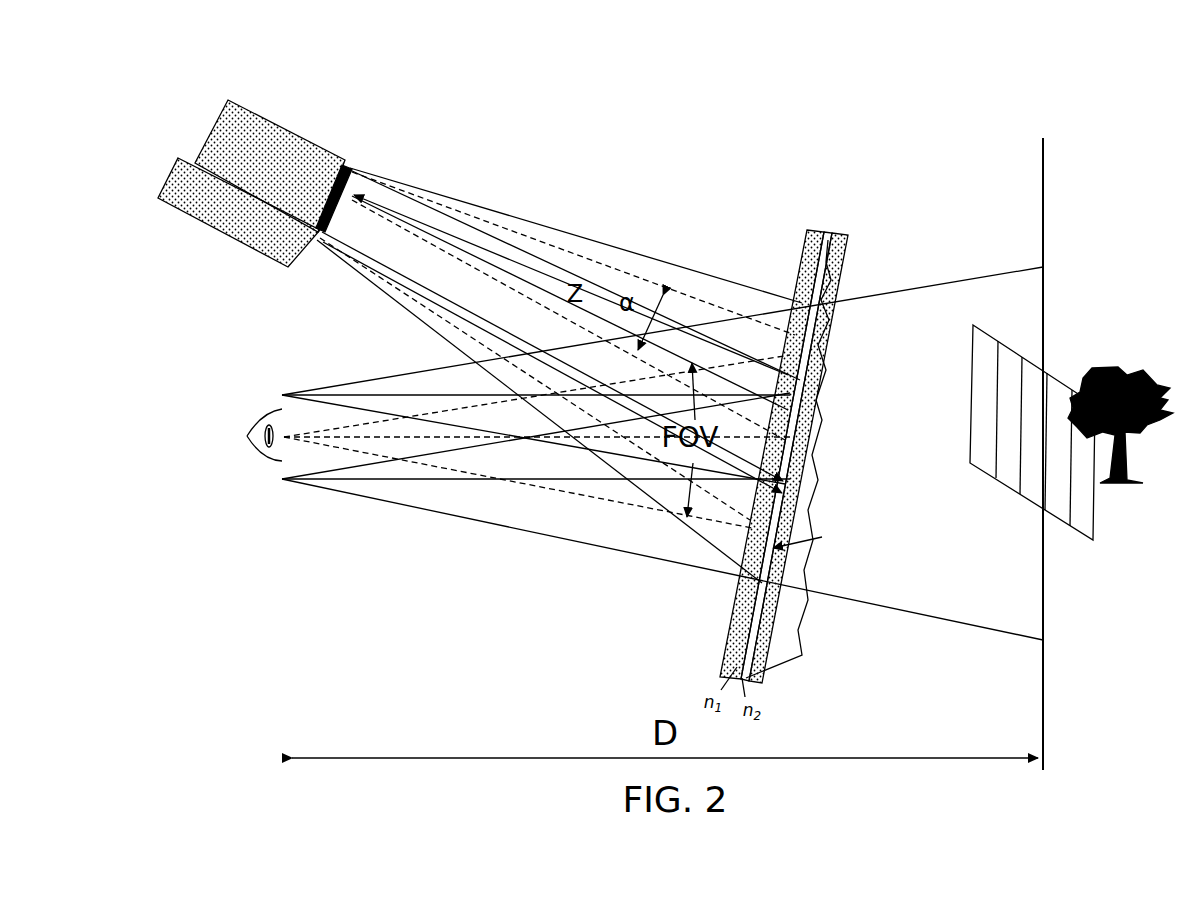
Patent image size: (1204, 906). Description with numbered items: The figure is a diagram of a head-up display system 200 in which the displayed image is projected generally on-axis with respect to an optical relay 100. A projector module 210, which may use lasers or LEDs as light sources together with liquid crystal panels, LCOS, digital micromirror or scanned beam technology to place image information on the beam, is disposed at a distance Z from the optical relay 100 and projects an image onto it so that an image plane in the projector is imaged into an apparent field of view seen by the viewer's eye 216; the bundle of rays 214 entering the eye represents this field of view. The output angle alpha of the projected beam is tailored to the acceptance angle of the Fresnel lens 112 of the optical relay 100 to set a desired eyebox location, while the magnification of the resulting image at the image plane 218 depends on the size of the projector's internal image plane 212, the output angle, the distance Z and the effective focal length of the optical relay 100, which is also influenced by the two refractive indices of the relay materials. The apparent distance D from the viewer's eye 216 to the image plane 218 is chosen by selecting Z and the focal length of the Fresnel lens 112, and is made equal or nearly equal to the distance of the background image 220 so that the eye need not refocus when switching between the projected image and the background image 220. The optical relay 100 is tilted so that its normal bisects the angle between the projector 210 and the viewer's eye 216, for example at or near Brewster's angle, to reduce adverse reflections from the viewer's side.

The head-up display system 200 is at (988, 48).
The projector module 210 is at (292, 133).
The projector's internal image plane 212 is at (348, 165).
The field of view rays 214 is at (293, 384).
The viewer's eye 216 is at (265, 422).
The optical relay 100 is at (820, 455).
The Fresnel lens 112 is at (770, 627).
The image plane 218 is at (1097, 510).
The background image 220 is at (1143, 380).